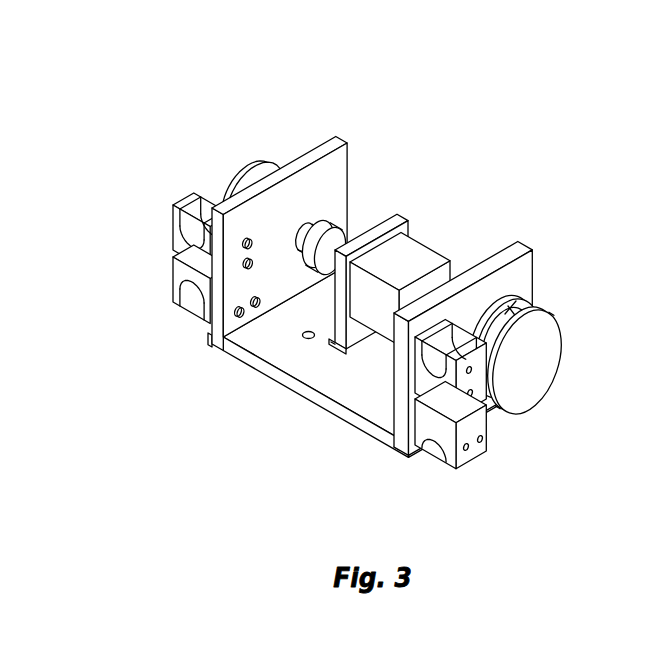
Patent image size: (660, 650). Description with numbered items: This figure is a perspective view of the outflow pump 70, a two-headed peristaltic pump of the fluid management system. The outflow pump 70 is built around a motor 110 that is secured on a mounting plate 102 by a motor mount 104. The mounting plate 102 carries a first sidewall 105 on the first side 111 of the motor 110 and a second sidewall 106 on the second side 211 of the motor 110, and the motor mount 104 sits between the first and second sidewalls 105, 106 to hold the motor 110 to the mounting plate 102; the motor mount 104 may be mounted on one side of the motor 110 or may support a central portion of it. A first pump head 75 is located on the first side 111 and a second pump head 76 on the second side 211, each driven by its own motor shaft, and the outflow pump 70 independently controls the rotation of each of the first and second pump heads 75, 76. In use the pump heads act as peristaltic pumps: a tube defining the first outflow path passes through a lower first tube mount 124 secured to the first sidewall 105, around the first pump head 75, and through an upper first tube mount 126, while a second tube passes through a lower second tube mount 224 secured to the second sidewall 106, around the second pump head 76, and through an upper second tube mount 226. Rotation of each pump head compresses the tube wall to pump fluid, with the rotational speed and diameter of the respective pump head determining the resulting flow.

The outflow pump 70 is at (433, 67).
The second pump head 76 is at (252, 168).
The second side 211 is at (358, 205).
The motor 110 is at (423, 248).
The first side 111 is at (475, 257).
The first pump head 75 is at (556, 341).
The upper first tube mount 126 is at (475, 381).
The lower first tube mount 124 is at (483, 437).
The upper second tube mount 226 is at (178, 232).
The lower second tube mount 224 is at (180, 284).
The second sidewall 106 is at (213, 349).
The motor mount 104 is at (332, 352).
The mounting plate 102 is at (340, 410).
The first sidewall 105 is at (401, 454).